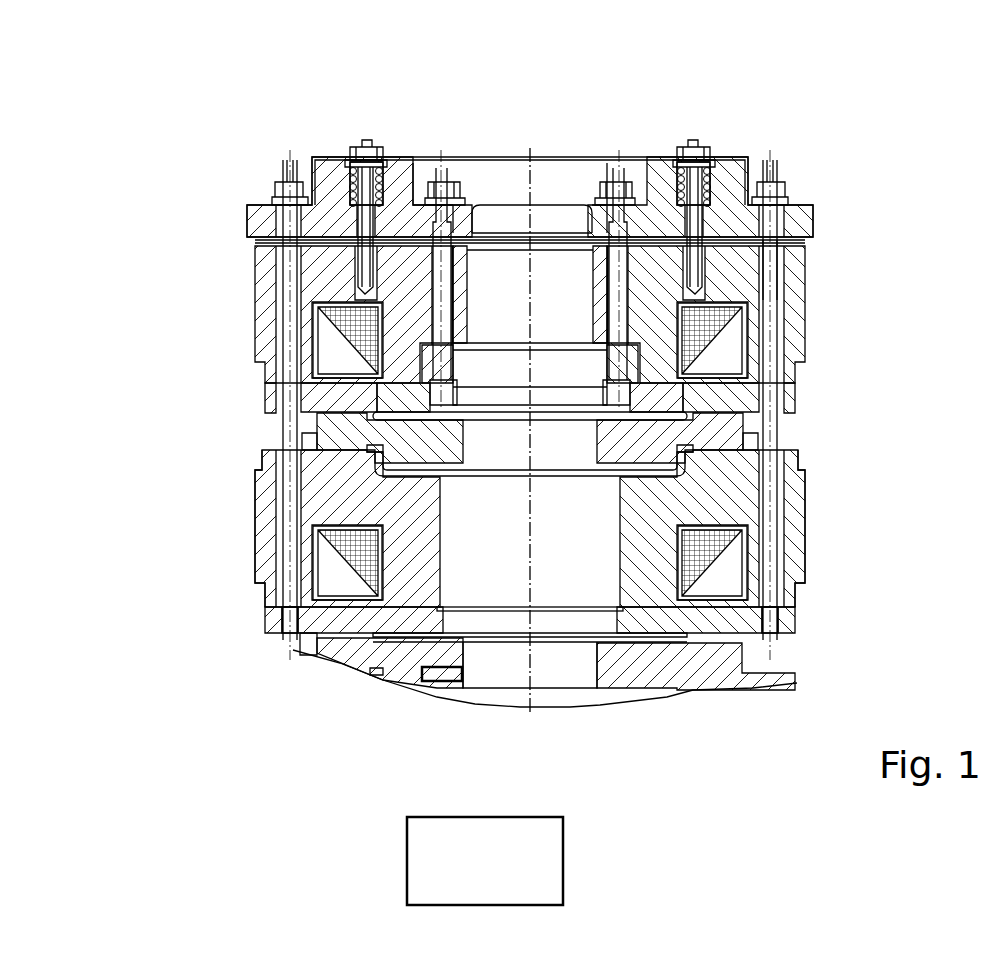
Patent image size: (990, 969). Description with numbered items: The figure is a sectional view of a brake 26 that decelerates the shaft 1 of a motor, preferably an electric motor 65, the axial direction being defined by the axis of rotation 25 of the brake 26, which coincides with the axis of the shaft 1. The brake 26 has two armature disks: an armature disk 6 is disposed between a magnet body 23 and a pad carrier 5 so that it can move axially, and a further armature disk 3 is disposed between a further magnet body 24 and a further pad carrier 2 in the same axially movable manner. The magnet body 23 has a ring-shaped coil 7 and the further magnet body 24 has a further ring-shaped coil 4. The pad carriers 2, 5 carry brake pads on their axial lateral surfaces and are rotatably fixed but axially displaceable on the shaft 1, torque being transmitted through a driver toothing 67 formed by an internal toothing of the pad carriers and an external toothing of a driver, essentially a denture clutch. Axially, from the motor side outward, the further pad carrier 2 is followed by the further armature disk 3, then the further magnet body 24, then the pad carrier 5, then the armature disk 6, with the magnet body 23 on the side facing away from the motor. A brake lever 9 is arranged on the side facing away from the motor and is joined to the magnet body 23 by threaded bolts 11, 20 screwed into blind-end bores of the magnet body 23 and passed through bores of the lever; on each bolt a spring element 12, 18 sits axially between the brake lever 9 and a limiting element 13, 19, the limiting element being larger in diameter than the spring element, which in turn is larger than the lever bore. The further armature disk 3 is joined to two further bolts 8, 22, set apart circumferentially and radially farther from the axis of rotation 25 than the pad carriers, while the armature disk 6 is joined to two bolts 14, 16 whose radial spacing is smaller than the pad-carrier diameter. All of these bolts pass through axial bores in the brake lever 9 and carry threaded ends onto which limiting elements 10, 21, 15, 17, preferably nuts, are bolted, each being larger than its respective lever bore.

The shaft 1 is at (492, 663).
The further pad carrier 2 is at (413, 660).
The further armature disk 3 is at (335, 622).
The further ring-shaped coil 4 is at (339, 581).
The pad carrier 5 is at (355, 433).
The armature disk 6 is at (342, 400).
The ring-shaped coil 7 is at (337, 355).
The further bolt 8 is at (293, 285).
The brake lever 9 is at (222, 217).
The limiting element 10 is at (282, 195).
The bolt 11 is at (355, 173).
The spring element 12 is at (367, 226).
The limiting element 13 is at (367, 155).
The bolt 14 is at (441, 253).
The limiting element 15 is at (453, 188).
The bolt 16 is at (618, 250).
The limiting element 17 is at (616, 188).
The spring element 18 is at (682, 173).
The limiting element 19 is at (695, 155).
The bolt 20 is at (692, 222).
The limiting element 21 is at (773, 188).
The further bolt 22 is at (773, 250).
The magnet body 23 is at (728, 290).
The further magnet body 24 is at (717, 493).
The axis of rotation 25 is at (529, 663).
The brake 26 is at (222, 532).
The electric motor 65 is at (563, 861).
The driver toothing 67 is at (440, 676).